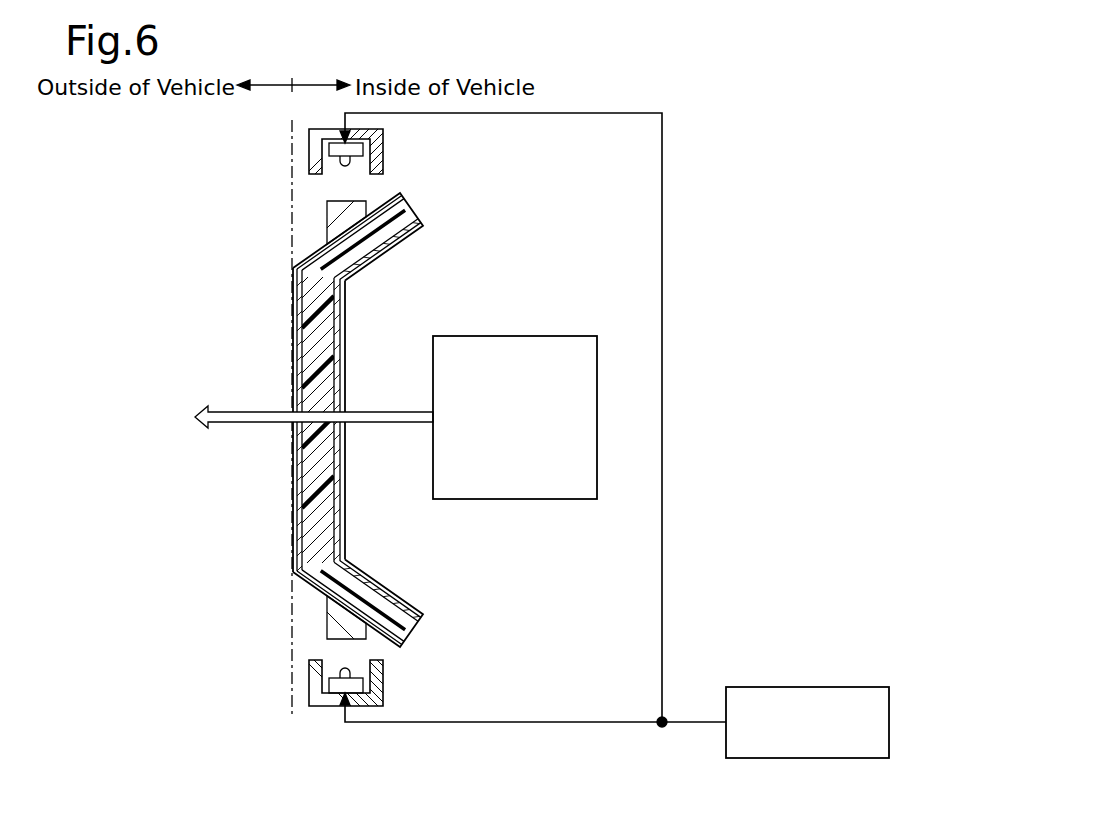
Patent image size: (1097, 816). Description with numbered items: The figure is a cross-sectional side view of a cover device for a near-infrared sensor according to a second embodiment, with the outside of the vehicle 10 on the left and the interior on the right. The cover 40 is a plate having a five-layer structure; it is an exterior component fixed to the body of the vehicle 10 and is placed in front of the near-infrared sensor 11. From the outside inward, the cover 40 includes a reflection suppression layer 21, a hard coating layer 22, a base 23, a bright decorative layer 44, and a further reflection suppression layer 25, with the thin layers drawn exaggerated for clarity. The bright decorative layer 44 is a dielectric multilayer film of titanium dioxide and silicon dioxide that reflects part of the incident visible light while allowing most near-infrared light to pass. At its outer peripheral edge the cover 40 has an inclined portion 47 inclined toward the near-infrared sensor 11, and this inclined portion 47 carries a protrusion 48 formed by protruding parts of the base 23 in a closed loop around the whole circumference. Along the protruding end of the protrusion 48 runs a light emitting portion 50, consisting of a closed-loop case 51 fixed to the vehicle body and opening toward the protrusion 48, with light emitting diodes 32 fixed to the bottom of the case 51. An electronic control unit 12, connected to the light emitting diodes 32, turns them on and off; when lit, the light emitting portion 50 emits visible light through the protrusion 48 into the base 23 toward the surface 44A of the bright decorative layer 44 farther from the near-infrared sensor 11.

The vehicle 10 is at (292, 170).
The near-infrared sensor 11 is at (514, 336).
The electronic control unit 12 is at (808, 687).
The reflection suppression layer 21 is at (293, 453).
The hard coating layer 22 is at (294, 503).
The base 23 is at (313, 537).
The reflection suppression layer 25 is at (346, 515).
The light emitting diode 32 is at (363, 150).
The cover 40 is at (346, 420).
The bright decorative layer 44 is at (343, 458).
The surface 44A is at (323, 366).
The inclined portion 47 is at (405, 254).
The protrusion 48 is at (327, 208).
The light emitting portion 50 is at (390, 417).
The case 51 is at (348, 132).